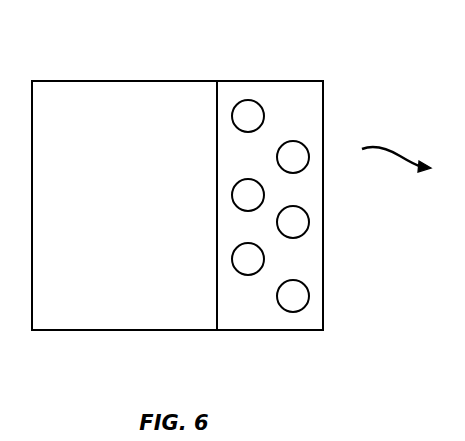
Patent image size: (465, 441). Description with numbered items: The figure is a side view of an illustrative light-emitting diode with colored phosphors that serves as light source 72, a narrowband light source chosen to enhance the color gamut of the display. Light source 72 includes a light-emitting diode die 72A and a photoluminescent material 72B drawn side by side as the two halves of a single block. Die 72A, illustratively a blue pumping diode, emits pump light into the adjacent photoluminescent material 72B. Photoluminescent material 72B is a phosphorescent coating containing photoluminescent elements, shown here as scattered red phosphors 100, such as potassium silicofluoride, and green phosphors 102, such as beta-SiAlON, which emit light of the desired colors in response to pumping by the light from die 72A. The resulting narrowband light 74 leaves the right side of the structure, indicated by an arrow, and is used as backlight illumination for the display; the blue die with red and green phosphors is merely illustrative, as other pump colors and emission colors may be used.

The light source 72 is at (325, 62).
The light-emitting diode die 72A is at (127, 323).
The photoluminescent material 72B is at (260, 323).
The red phosphors 100 is at (264, 110).
The green phosphors 102 is at (309, 157).
The light 74 is at (400, 156).